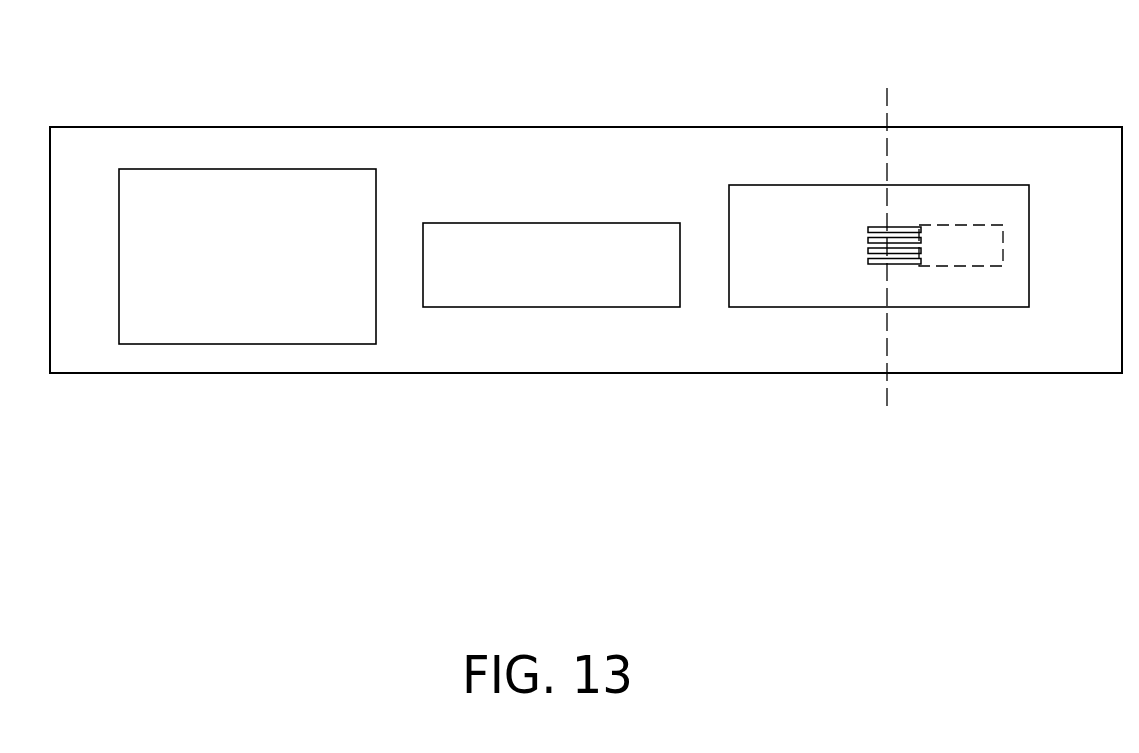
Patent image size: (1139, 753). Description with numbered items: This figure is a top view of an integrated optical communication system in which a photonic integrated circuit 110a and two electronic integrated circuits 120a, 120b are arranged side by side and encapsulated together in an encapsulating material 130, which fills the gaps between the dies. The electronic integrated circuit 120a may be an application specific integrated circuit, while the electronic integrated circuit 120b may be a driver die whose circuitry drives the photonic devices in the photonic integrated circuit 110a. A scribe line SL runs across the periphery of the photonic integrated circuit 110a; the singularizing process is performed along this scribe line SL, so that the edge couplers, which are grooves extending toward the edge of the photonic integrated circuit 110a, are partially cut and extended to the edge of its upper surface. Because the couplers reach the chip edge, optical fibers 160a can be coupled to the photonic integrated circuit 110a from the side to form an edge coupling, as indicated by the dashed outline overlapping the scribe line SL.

The encapsulating material 130 is at (693, 145).
The electronic integrated circuit 120a is at (258, 329).
The electronic integrated circuit 120b is at (553, 295).
The photonic integrated circuit 110a is at (811, 294).
The optical fibers 160a is at (972, 222).
The scribe line SL is at (885, 229).